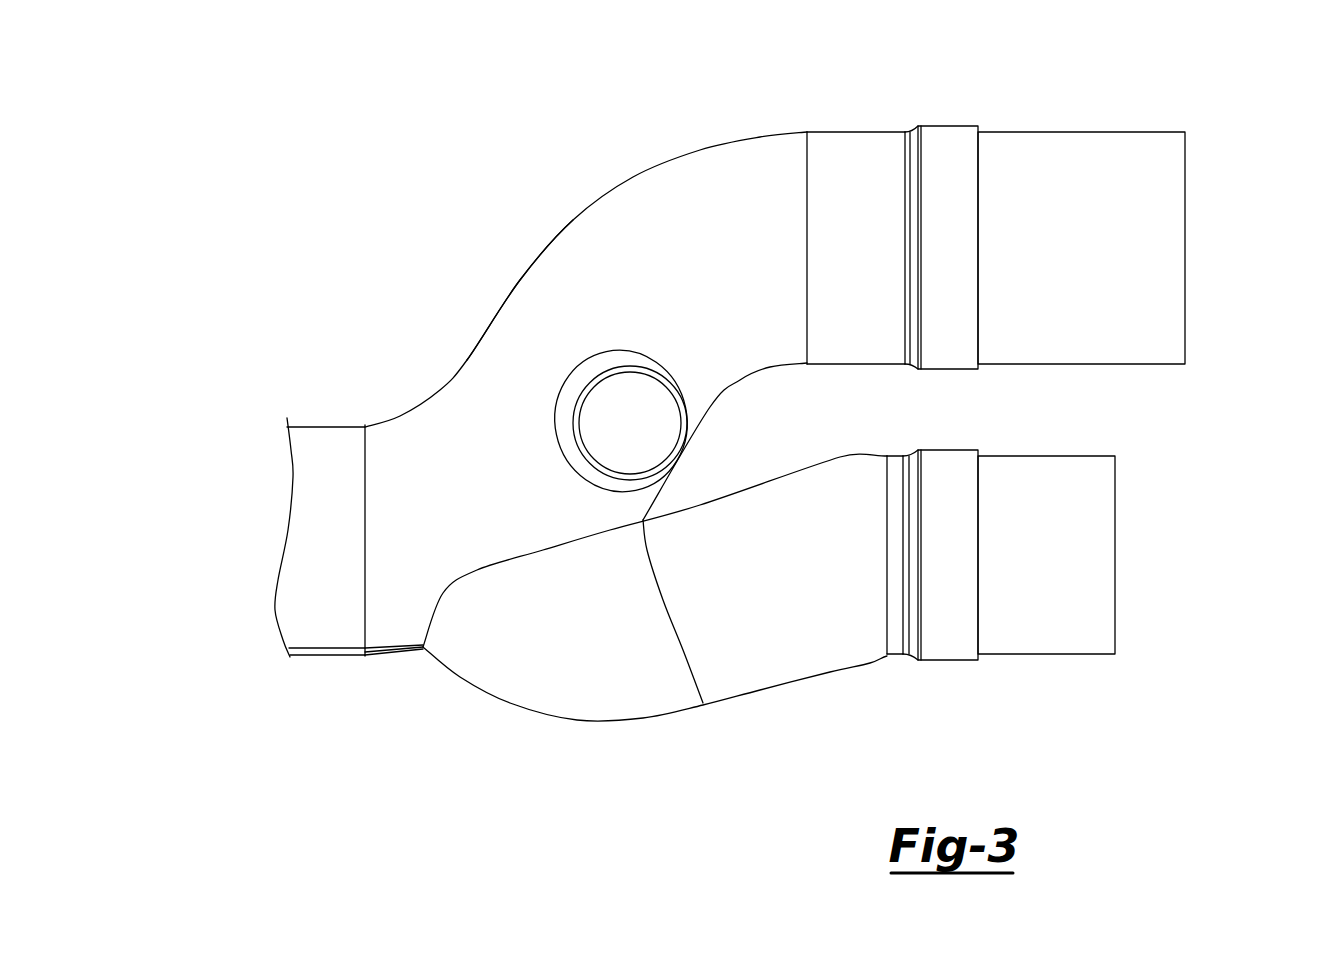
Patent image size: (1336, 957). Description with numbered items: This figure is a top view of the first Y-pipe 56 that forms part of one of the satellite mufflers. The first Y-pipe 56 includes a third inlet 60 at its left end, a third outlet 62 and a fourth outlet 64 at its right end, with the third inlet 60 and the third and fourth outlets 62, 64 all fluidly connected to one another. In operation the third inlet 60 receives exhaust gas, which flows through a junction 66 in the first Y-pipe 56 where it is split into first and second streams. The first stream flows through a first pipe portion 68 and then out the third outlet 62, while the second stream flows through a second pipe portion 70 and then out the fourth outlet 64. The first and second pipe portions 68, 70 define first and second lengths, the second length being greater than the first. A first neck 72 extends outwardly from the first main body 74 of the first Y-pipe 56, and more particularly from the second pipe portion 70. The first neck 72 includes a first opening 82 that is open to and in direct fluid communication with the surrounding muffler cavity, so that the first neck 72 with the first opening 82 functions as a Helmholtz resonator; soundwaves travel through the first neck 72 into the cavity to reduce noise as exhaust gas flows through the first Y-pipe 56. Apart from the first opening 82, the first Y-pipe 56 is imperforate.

The first Y-pipe 56 is at (305, 122).
The third inlet 60 is at (297, 513).
The third outlet 62 is at (1115, 569).
The fourth outlet 64 is at (1185, 178).
The junction 66 is at (393, 457).
The first pipe portion 68 is at (705, 645).
The second pipe portion 70 is at (656, 212).
The first neck 72 is at (580, 397).
The first main body 74 is at (563, 298).
The first opening 82 is at (625, 458).